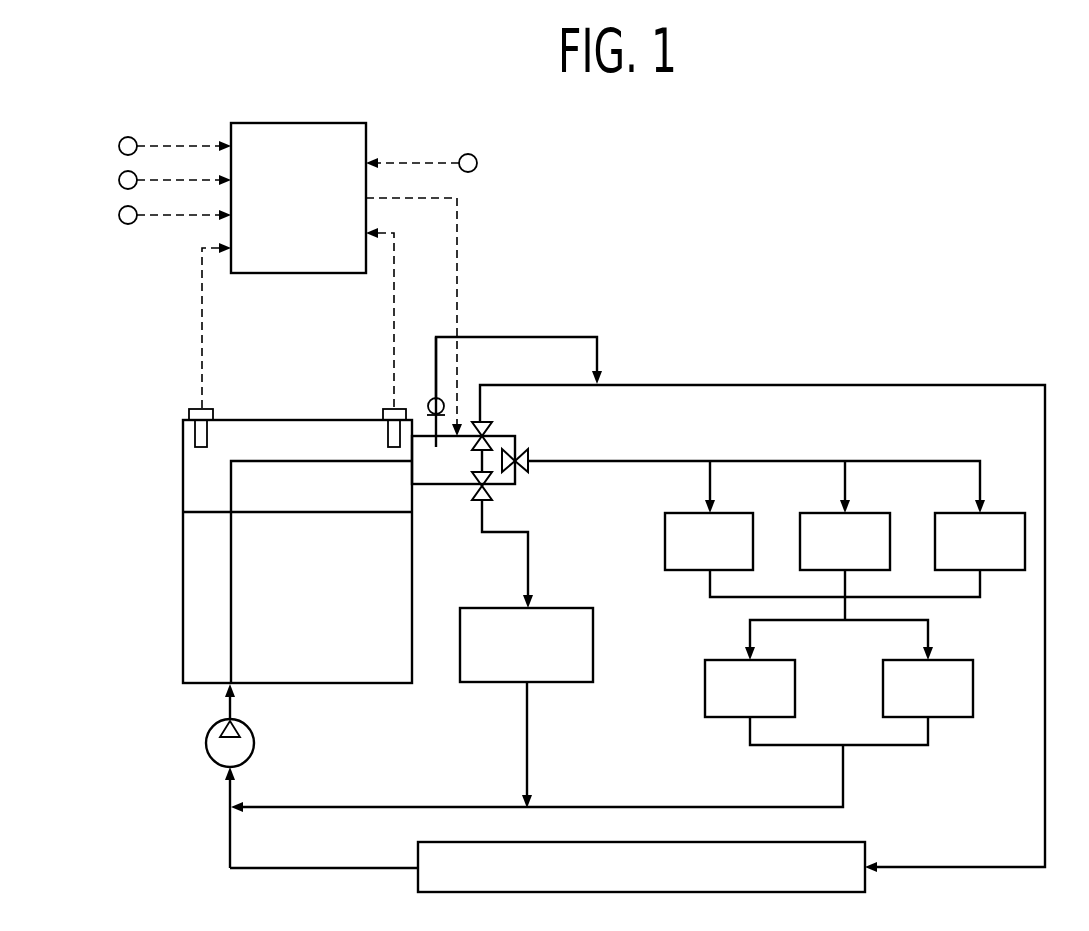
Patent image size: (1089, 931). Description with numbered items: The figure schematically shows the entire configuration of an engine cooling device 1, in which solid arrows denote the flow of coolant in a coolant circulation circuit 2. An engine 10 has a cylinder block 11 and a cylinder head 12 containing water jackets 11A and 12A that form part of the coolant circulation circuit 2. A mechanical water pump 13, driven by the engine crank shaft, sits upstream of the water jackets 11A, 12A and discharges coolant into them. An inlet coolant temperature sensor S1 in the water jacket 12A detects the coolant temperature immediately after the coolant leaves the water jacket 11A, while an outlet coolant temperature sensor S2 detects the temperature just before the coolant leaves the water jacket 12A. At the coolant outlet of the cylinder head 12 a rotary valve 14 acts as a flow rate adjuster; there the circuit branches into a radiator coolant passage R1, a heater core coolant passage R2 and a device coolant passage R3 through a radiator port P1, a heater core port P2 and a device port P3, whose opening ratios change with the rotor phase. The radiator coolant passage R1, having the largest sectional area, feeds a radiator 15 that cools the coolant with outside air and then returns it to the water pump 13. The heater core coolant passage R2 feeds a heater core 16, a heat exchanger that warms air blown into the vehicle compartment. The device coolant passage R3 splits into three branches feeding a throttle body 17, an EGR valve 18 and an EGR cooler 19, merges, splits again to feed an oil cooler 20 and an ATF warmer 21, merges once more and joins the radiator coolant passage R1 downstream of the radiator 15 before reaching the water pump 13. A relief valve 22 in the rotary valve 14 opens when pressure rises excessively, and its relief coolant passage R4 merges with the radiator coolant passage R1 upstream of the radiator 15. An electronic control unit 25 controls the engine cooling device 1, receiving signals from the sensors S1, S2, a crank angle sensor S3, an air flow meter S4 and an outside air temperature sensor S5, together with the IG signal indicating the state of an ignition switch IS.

The engine cooling device 1 is at (947, 198).
The coolant circulation circuit 2 is at (987, 371).
The engine 10 is at (112, 470).
The cylinder block 11 is at (183, 553).
The water jacket 11A is at (313, 599).
The cylinder head 12 is at (183, 481).
The water jacket 12A is at (313, 500).
The water pump 13 is at (206, 742).
The rotary valve 14 is at (443, 487).
The radiator 15 is at (843, 842).
The heater core 16 is at (595, 663).
The throttle body 17 is at (690, 512).
The EGR valve 18 is at (825, 512).
The EGR cooler 19 is at (960, 512).
The oil cooler 20 is at (730, 658).
The ATF warmer 21 is at (948, 660).
The relief valve 22 is at (425, 413).
The electronic control unit 25 is at (279, 273).
The inlet coolant temperature sensor S1 is at (187, 410).
The outlet coolant temperature sensor S2 is at (382, 410).
The crank angle sensor S3 is at (119, 146).
The air flow meter S4 is at (119, 180).
The outside air temperature sensor S5 is at (119, 215).
The ignition switch IS is at (477, 163).
The radiator port P1 is at (484, 422).
The heater core port P2 is at (488, 500).
The device port P3 is at (528, 457).
The radiator coolant passage R1 is at (858, 383).
The heater core coolant passage R2 is at (530, 560).
The device coolant passage R3 is at (673, 460).
The relief coolant passage R4 is at (600, 347).